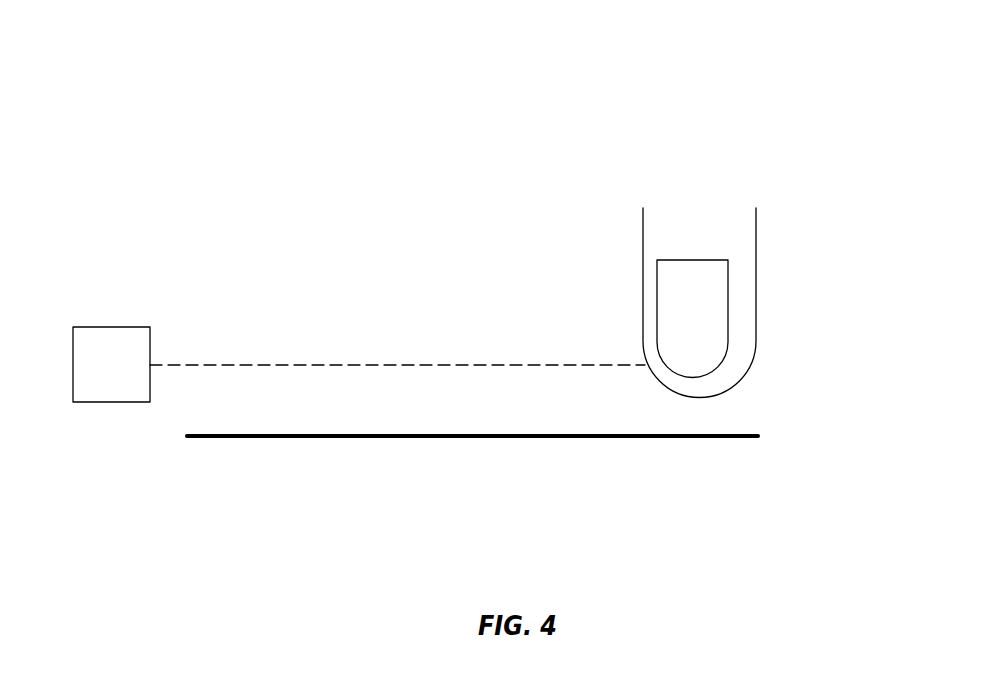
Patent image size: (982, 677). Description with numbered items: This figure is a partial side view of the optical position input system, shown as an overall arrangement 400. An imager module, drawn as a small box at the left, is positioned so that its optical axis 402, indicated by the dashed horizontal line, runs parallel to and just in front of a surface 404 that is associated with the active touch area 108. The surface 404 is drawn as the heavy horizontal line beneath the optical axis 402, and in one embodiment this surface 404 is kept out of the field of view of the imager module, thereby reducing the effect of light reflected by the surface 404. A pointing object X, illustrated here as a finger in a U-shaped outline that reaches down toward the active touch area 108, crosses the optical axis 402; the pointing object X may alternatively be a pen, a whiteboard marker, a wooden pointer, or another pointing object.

The example scenario 400 is at (96, 42).
The optical axis 402 is at (540, 365).
The surface 404 is at (502, 424).
The pointing object X is at (756, 303).
The active touch area 108 is at (777, 413).